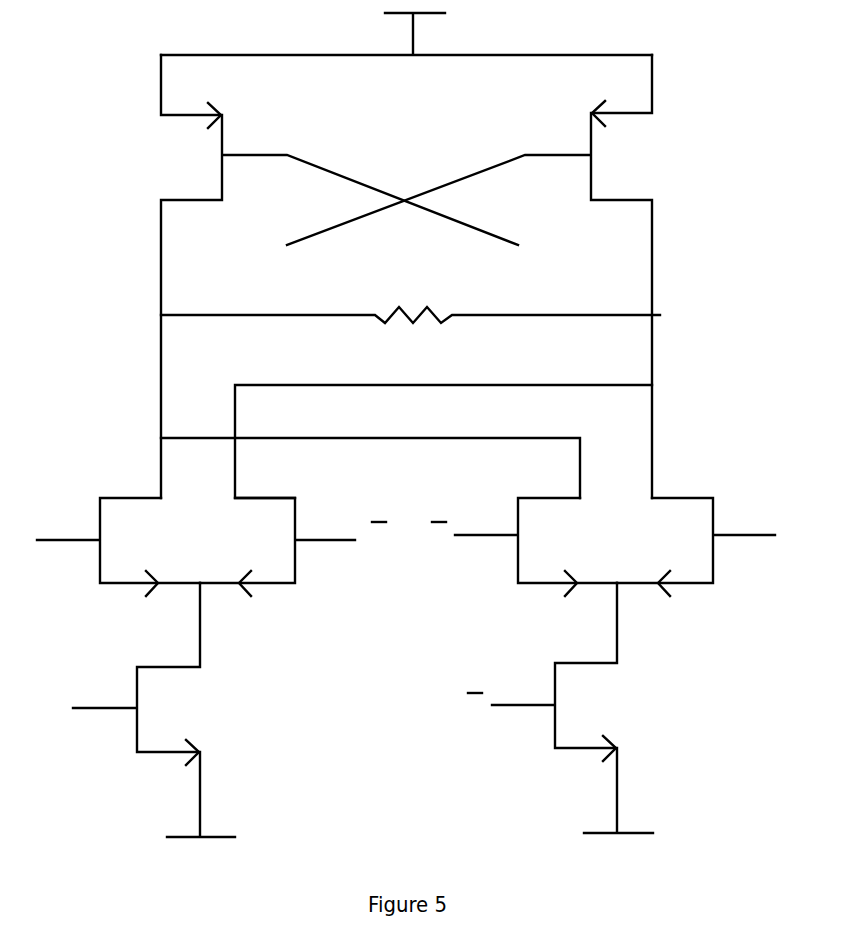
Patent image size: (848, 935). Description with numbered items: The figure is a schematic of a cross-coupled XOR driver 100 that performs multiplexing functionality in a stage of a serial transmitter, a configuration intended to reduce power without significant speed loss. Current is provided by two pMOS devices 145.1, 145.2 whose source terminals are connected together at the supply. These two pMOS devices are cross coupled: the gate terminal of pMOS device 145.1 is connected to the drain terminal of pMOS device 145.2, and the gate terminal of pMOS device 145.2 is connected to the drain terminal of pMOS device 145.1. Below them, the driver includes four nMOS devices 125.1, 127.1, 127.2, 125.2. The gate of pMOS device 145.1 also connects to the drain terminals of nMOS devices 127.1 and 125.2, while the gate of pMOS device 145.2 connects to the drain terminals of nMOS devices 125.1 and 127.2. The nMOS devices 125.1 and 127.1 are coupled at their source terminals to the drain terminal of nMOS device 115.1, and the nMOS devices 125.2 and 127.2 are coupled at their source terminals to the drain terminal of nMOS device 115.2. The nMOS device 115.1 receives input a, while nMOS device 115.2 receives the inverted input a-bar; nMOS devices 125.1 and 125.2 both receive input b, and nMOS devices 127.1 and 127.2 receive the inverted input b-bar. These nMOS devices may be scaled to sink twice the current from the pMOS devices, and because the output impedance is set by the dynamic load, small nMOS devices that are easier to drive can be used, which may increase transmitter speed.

The XOR driver 100 is at (406, 425).
The pMOS device 145.1 is at (335, 276).
The pMOS device 145.2 is at (474, 276).
The nMOS device 125.1 is at (108, 547).
The nMOS device 127.1 is at (293, 547).
The nMOS device 127.2 is at (524, 547).
The nMOS device 125.2 is at (706, 547).
The nMOS device 115.1 is at (142, 710).
The nMOS device 115.2 is at (560, 708).